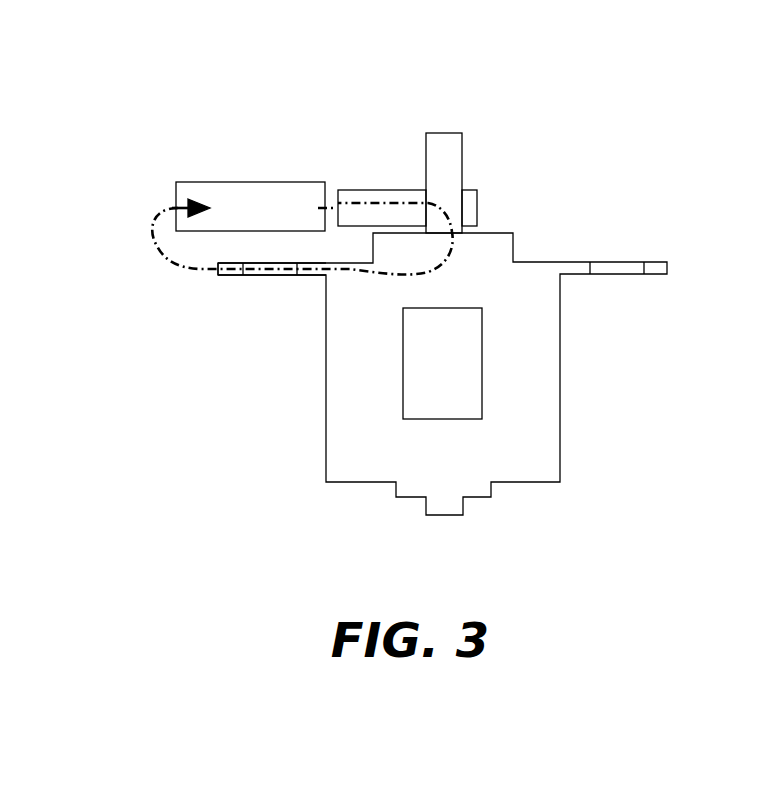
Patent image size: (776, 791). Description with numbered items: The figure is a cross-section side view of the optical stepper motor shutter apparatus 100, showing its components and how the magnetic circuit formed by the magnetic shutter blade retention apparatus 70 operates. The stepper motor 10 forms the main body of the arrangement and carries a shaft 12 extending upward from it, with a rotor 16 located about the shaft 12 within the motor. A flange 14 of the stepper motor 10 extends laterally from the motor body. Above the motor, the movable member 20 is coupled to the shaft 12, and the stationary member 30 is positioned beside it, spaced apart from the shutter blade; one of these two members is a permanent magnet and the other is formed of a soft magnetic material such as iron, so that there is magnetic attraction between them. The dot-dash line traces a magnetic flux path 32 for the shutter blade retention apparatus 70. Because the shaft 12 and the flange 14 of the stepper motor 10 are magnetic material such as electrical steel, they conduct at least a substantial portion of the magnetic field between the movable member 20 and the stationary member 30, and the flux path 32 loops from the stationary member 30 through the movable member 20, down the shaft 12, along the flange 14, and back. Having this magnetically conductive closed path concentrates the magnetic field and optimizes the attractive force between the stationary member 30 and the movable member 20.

The stepper motor 10 is at (317, 412).
The shaft 12 is at (449, 162).
The flange 14 is at (262, 283).
The rotor 16 is at (460, 381).
The movable member 20 is at (375, 178).
The stationary member 30 is at (254, 192).
The magnetic flux path 32 is at (150, 256).
The magnetic shutter blade retention apparatus 70 is at (152, 53).
The optical stepper motor shutter apparatus 100 is at (704, 181).